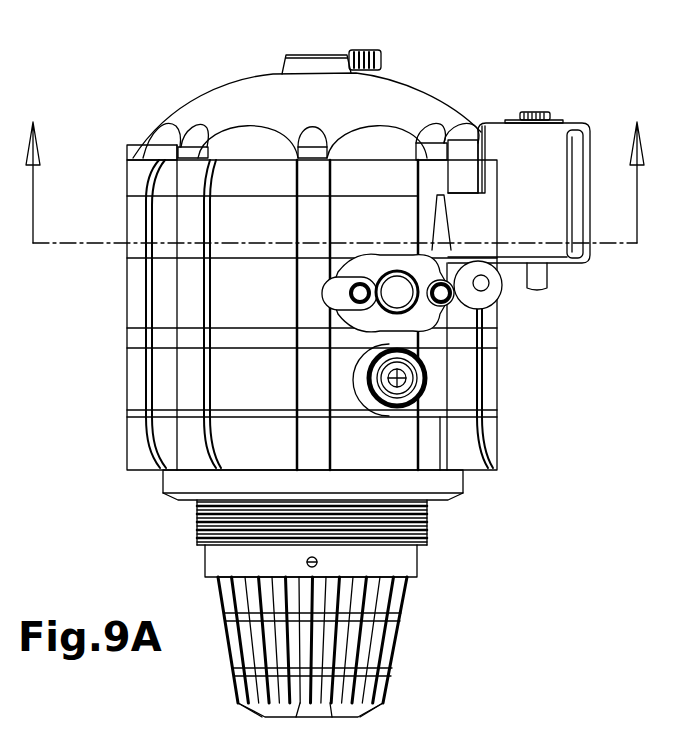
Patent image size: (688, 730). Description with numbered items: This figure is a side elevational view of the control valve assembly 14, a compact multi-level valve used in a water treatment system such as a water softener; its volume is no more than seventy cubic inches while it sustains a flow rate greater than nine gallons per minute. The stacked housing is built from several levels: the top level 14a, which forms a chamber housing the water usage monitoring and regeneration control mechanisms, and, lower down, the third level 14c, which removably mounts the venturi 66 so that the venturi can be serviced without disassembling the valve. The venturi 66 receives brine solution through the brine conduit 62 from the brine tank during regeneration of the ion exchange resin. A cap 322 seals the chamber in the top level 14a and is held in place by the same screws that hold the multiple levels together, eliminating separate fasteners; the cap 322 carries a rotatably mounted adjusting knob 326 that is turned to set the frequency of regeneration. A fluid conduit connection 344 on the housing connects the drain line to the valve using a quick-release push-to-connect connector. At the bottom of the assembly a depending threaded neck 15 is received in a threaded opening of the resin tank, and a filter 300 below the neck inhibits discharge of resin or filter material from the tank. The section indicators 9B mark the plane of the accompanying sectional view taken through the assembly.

The control valve assembly 14 is at (467, 90).
The top level 14a is at (127, 190).
The third level 14c is at (143, 310).
The threaded neck 15 is at (427, 520).
The brine conduit 62 is at (419, 397).
The venturi 66 is at (401, 297).
The filter 300 is at (397, 642).
The cap 322 is at (232, 97).
The adjusting knob 326 is at (381, 52).
The fluid conduit connection 344 is at (416, 375).
The section line 9B is at (336, 169).